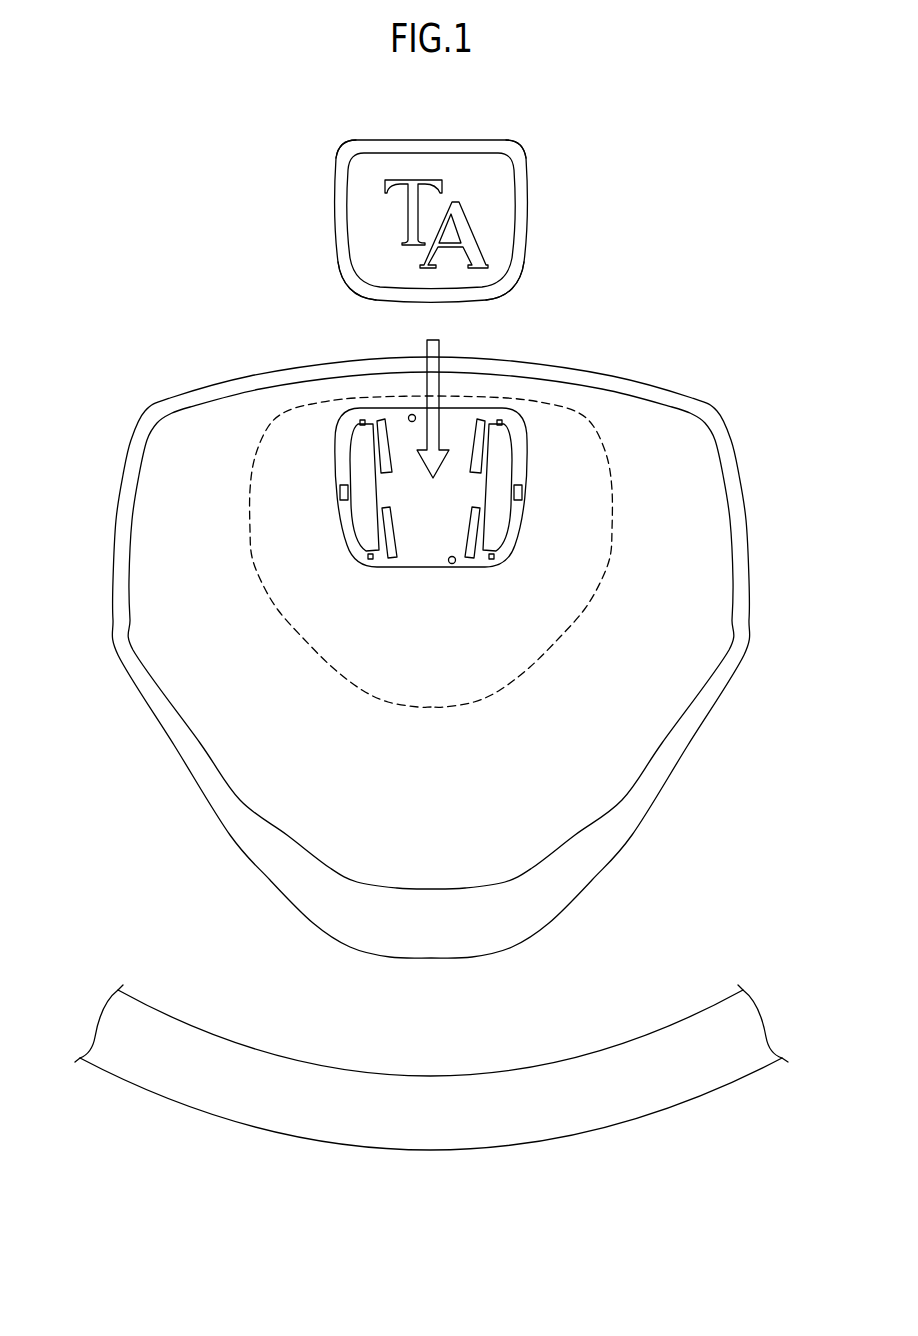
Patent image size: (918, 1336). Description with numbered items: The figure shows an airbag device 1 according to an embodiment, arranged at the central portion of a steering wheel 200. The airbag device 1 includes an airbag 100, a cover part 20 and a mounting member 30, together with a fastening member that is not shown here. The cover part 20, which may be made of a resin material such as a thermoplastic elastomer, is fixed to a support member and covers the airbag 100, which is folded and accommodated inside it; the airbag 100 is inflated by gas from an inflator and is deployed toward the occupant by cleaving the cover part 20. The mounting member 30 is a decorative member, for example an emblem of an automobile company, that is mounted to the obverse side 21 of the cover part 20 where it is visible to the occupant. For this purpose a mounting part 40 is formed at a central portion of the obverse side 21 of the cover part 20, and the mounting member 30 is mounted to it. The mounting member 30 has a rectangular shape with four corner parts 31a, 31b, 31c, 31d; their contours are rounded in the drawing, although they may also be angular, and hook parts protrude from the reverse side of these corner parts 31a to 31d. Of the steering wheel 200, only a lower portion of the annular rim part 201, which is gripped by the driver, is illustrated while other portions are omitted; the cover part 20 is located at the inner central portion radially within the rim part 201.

The airbag device 1 is at (180, 143).
The cover part 20 is at (715, 411).
The obverse side 21 is at (710, 493).
The mounting member 30 is at (433, 224).
The corner part 31a is at (350, 159).
The corner part 31b is at (510, 159).
The corner part 31c is at (505, 283).
The corner part 31d is at (360, 283).
The mounting part 40 is at (529, 478).
The airbag 100 is at (313, 406).
The steering wheel 200 is at (431, 1078).
The rim part 201 is at (595, 1118).